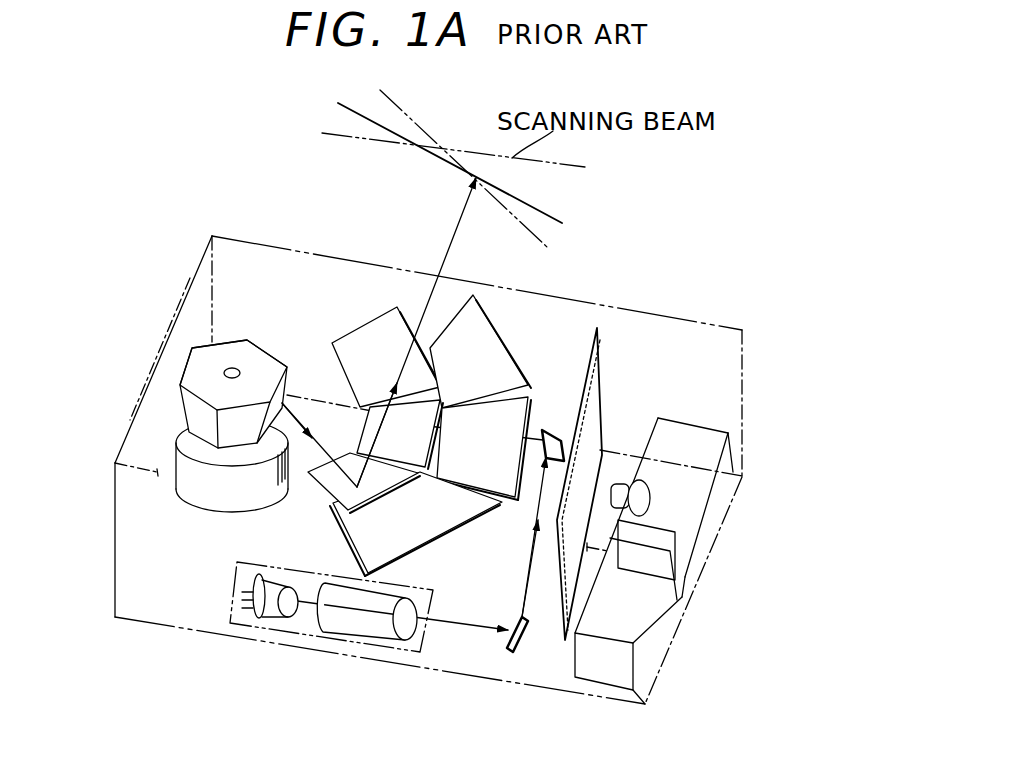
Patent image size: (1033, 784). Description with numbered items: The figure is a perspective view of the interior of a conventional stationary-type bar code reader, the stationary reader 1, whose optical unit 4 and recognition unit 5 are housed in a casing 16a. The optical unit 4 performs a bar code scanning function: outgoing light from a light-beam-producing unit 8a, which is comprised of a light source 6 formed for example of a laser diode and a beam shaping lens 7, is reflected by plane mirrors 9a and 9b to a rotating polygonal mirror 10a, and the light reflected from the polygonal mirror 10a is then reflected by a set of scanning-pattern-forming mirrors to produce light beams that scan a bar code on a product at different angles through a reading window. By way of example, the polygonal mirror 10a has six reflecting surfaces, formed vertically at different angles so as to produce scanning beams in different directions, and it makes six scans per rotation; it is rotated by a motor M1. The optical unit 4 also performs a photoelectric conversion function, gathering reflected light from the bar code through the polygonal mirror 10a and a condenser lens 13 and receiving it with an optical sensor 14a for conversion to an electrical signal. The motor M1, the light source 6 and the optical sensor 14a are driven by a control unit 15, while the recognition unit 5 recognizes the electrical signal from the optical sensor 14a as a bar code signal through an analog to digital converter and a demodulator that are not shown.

The stationary reader 1 is at (218, 170).
The optical unit 4 is at (300, 260).
The casing 16a is at (192, 277).
The polygonal mirror 10a is at (190, 413).
The motor M1 is at (185, 488).
The plane mirror 9a is at (525, 645).
The plane mirror 9b is at (548, 428).
The condenser lens 13 is at (593, 395).
The control unit 15 is at (672, 430).
The optical sensor 14a is at (642, 500).
The recognition unit 5 is at (660, 627).
The light source 6 is at (278, 620).
The beam shaping lens 7 is at (368, 628).
The light-beam-producing unit 8a is at (420, 653).